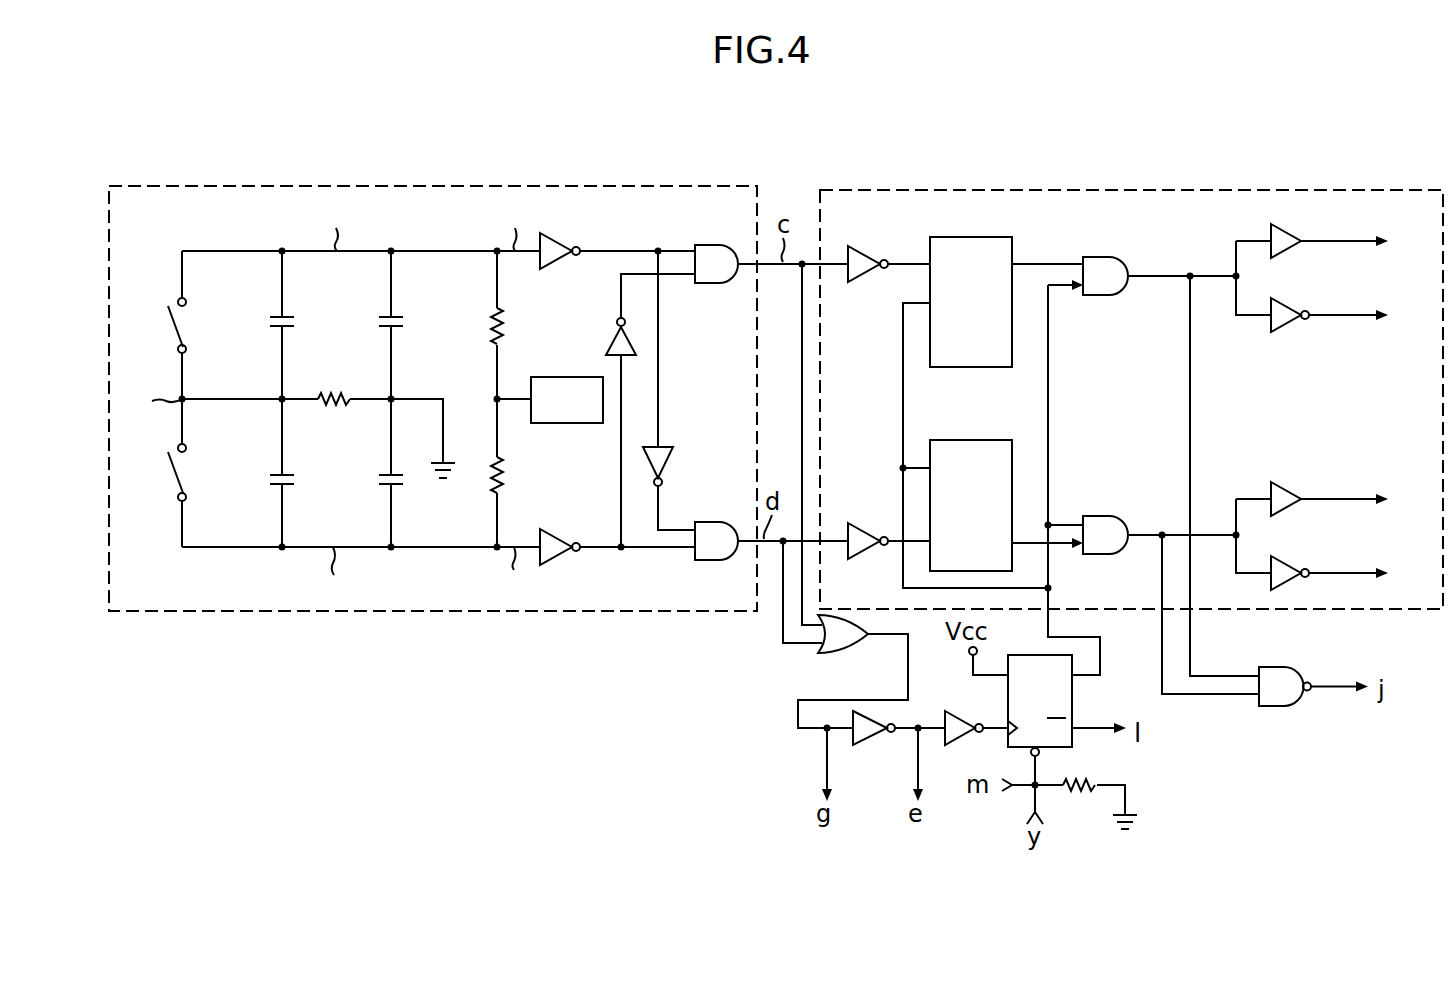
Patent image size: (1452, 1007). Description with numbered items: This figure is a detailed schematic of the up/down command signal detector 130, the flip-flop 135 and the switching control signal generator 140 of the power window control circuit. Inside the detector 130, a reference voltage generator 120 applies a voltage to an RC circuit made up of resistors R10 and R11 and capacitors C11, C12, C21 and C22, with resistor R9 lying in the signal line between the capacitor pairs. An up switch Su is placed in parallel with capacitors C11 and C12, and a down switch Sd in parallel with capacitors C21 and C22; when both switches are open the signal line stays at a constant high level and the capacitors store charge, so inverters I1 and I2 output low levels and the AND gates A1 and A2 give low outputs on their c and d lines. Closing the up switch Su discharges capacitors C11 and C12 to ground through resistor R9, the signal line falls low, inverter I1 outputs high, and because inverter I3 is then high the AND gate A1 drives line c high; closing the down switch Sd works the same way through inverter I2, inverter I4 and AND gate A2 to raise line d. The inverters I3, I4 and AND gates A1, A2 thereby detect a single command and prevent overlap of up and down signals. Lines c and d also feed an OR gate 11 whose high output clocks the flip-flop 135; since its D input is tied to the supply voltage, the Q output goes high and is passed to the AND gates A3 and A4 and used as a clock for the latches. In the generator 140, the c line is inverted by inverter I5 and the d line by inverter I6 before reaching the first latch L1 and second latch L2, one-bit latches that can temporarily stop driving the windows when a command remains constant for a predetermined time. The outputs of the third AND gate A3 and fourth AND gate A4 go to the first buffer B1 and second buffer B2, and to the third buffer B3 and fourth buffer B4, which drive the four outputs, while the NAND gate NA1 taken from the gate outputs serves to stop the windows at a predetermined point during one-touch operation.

The up/down command signal detector 130 is at (426, 186).
The switching control signal generator 140 is at (1137, 190).
The reference voltage generator 120 is at (550, 400).
The flip-flop 135 is at (1072, 697).
The OR gate 11 is at (856, 651).
The up switch Su is at (164, 325).
The down switch Sd is at (159, 473).
The capacitor C11 is at (254, 325).
The capacitor C12 is at (364, 325).
The capacitor C21 is at (255, 473).
The capacitor C22 is at (363, 473).
The resistor R9 is at (334, 415).
The resistor R10 is at (469, 325).
The resistor R11 is at (521, 473).
The inverter I1 is at (560, 245).
The inverter I2 is at (560, 558).
The inverter I3 is at (612, 342).
The inverter I4 is at (673, 458).
The inverter I5 is at (864, 254).
The inverter I6 is at (864, 532).
The AND gate A1 is at (711, 283).
The AND gate A2 is at (711, 560).
The third AND gate A3 is at (1101, 257).
The fourth AND gate A4 is at (1101, 516).
The first latch L1 is at (993, 412).
The second latch L2 is at (993, 505).
The first buffer B1 is at (1296, 234).
The second buffer B2 is at (1296, 308).
The third buffer B3 is at (1296, 493).
The fourth buffer B4 is at (1296, 566).
The NAND gate NA1 is at (1278, 706).